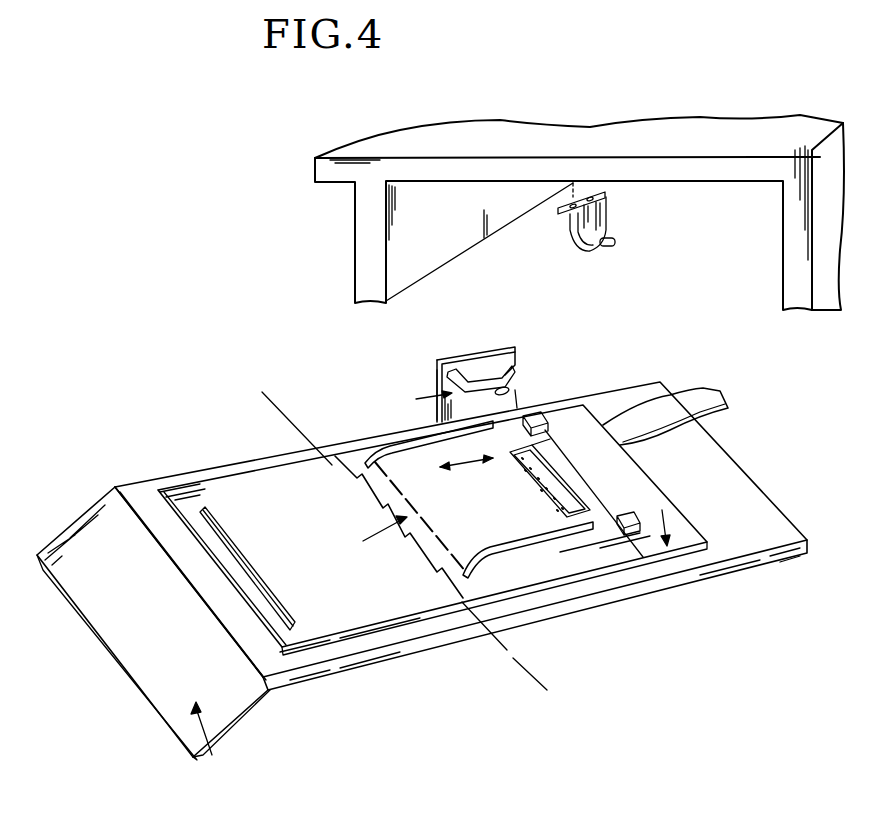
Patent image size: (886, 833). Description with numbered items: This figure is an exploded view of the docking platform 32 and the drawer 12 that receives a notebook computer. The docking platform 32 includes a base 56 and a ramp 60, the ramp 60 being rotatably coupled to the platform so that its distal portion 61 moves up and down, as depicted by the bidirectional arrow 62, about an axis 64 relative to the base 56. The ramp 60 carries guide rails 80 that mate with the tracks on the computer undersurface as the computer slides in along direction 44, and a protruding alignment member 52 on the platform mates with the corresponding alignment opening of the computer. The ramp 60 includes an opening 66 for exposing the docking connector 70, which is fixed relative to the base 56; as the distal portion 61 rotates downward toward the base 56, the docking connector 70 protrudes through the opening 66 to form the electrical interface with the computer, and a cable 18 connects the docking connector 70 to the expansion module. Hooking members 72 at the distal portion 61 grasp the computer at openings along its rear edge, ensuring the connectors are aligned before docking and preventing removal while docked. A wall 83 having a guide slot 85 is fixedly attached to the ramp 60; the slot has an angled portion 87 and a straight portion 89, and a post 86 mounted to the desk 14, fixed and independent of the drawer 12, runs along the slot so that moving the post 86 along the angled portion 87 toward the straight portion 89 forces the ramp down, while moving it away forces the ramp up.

The desk 14 is at (551, 163).
The post 86 is at (612, 240).
The drawer 12 is at (143, 490).
The docking platform 32 is at (250, 480).
The alignment member 52 is at (230, 542).
The base 56 is at (320, 550).
The direction 44 is at (385, 540).
The ramp 60 is at (487, 505).
The guide rails 80 is at (425, 443).
The docking connector 70 is at (547, 494).
The opening 66 is at (550, 440).
The distal portion 61 is at (600, 497).
The bidirectional arrow 62 is at (667, 523).
The hooking members 72 is at (524, 415).
The cable 18 is at (712, 398).
The angled portion 87 is at (484, 350).
The wall 83 is at (436, 377).
The guide slot 85 is at (419, 405).
The straight portion 89 is at (509, 389).
The axis 64 is at (527, 682).